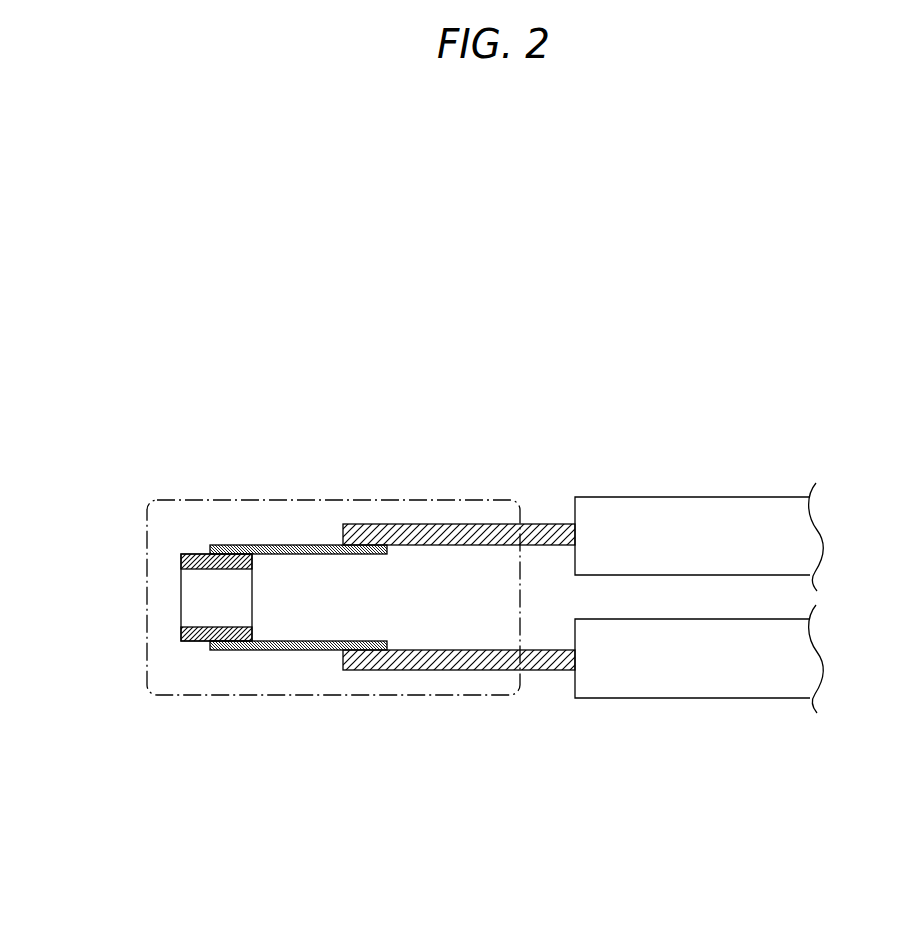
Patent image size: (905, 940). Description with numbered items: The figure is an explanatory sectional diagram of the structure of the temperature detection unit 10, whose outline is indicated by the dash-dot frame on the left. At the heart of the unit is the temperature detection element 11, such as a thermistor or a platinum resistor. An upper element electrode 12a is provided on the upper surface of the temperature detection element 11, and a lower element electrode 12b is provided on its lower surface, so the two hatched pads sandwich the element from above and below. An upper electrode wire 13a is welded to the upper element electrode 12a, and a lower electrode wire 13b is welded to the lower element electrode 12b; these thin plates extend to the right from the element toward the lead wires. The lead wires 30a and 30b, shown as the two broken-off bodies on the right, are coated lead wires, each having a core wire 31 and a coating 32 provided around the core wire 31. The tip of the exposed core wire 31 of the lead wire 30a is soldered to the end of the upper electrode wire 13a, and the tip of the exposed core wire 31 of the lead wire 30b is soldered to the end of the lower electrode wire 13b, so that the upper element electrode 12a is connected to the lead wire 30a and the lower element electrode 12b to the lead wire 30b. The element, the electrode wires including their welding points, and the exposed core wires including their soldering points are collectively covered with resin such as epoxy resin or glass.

The temperature detection unit 10 is at (258, 463).
The temperature detection element 11 is at (182, 603).
The upper element electrode 12a is at (182, 560).
The lower element electrode 12b is at (182, 633).
The upper electrode wire 13a is at (313, 545).
The lower electrode wire 13b is at (313, 650).
The core wire 31 is at (553, 524).
The coating 32 is at (703, 598).
The lead wire 30a is at (705, 483).
The lead wire 30b is at (705, 715).